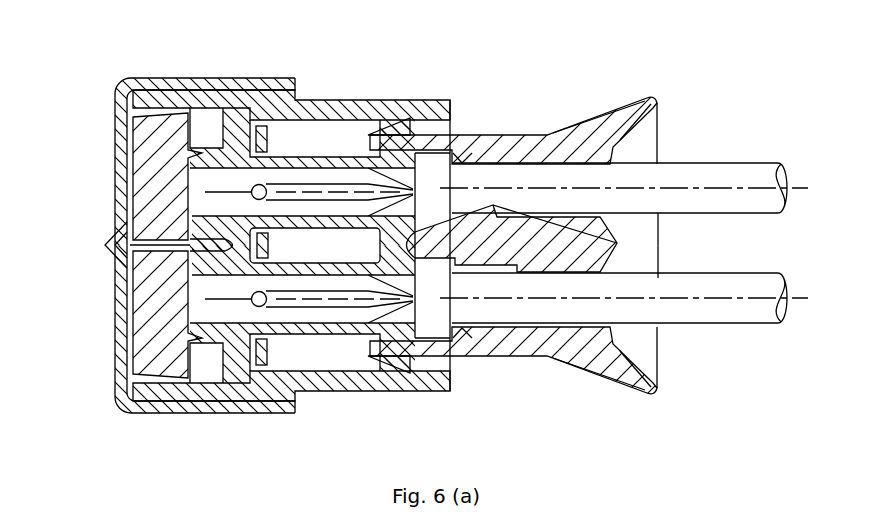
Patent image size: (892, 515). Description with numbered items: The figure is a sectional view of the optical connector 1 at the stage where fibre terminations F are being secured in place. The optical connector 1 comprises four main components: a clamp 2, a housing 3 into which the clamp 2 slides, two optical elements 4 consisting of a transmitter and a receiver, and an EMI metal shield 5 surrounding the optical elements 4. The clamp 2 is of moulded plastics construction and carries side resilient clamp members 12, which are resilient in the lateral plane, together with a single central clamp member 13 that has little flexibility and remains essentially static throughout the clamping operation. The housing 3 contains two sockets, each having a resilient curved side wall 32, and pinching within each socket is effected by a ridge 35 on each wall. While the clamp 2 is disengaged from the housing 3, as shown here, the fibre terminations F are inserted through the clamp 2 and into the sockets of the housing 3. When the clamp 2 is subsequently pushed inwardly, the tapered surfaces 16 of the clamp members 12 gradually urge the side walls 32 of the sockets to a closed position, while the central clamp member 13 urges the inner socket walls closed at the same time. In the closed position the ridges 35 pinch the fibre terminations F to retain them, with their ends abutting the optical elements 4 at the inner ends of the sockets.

The optical connector 1 is at (84, 118).
The clamp 2 is at (668, 378).
The housing 3 is at (398, 402).
The optical elements 4 is at (200, 165).
The EMI metal shield 5 is at (123, 377).
The side resilient clamp members 12 is at (477, 131).
The central clamp member 13 is at (616, 243).
The tapered surfaces 16 is at (507, 132).
The resilient curved side wall 32 is at (355, 125).
The ridge 35 is at (372, 170).
The fibre terminations F is at (702, 163).